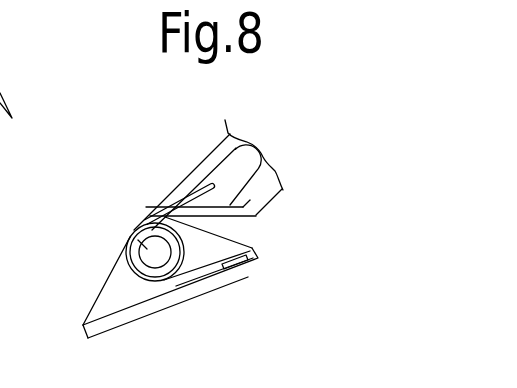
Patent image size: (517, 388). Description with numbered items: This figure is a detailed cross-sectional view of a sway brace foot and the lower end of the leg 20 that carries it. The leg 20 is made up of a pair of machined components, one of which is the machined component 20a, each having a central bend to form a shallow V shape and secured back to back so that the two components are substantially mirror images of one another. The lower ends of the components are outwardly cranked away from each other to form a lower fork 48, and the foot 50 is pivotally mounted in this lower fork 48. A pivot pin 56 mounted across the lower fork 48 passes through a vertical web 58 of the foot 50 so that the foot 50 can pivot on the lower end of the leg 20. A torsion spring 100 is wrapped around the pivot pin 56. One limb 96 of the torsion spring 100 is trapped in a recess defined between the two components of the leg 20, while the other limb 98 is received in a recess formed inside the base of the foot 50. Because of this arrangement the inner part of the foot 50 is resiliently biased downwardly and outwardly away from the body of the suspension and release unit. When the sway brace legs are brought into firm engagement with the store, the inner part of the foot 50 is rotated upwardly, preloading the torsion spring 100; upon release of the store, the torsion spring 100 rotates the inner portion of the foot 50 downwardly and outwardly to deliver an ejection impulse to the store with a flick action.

The leg 20 is at (279, 166).
The machined component 20a is at (186, 180).
The limb of the torsion spring 96 is at (210, 188).
The pivot pin 56 is at (131, 233).
The torsion spring 100 is at (127, 259).
The vertical web 58 is at (112, 293).
The foot 50 is at (130, 312).
The limb of the torsion spring 98 is at (222, 267).
The lower fork 48 is at (212, 230).